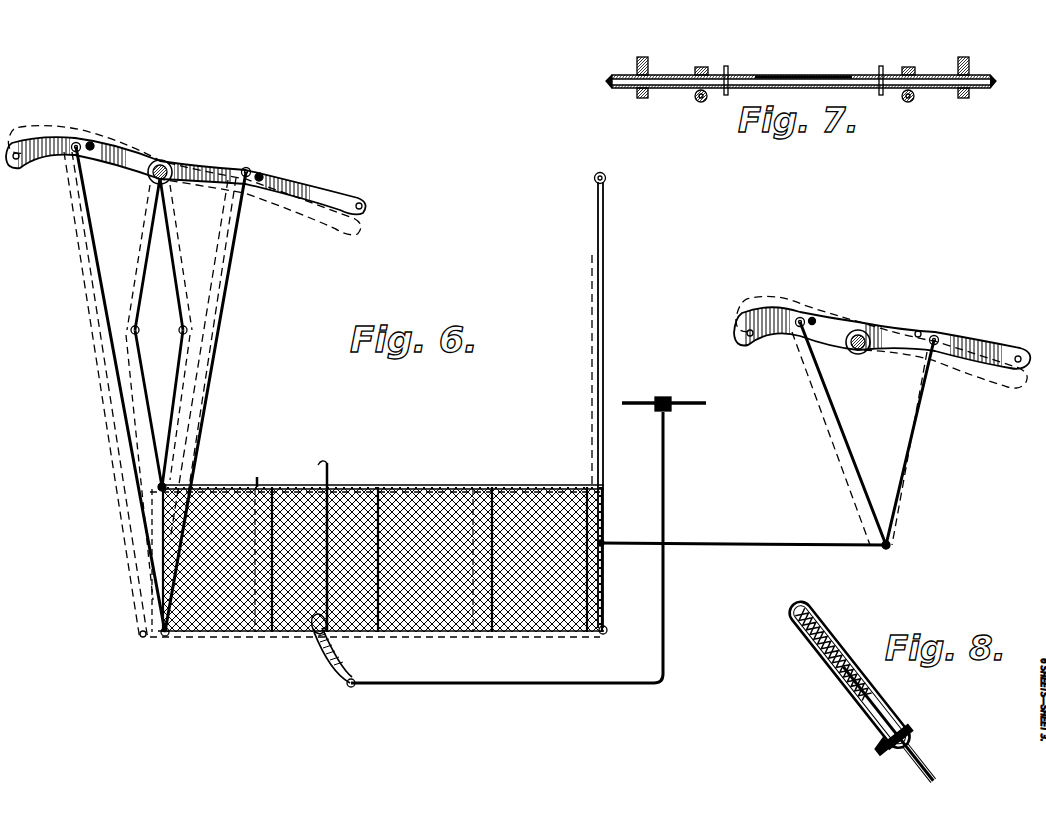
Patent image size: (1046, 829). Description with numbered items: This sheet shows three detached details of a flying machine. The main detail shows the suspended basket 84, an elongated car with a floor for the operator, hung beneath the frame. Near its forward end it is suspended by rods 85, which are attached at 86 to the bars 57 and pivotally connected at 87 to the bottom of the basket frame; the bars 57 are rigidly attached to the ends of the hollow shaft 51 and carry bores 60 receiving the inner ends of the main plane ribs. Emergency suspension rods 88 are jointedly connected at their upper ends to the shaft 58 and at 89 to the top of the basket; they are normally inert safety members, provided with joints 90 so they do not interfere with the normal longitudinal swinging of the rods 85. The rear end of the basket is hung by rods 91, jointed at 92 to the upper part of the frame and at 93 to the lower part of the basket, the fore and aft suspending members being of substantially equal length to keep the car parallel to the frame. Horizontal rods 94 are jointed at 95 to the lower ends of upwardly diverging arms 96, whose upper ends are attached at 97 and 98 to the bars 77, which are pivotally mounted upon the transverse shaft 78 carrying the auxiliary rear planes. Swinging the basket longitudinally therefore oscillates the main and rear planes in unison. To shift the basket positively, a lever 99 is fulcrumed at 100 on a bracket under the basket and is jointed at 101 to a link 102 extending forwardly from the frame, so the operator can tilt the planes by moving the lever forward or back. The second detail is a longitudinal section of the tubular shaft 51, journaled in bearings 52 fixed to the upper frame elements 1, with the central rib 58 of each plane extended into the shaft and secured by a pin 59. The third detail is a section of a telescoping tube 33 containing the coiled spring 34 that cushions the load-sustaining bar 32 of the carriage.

In FIG. 7, the upper frame element 1 is at (696, 100).
In FIG. 8, the bar 32 is at (911, 708).
In FIG. 8, the tube 33 is at (854, 637).
In FIG. 8, the coiled spring 34 is at (839, 683).
In FIG. 7, the hollow shaft 51 is at (800, 74).
In FIG. 7, the bearing 52 is at (701, 67).
In FIG. 6, the bar 57 is at (186, 156).
In FIG. 7, the bar 57 is at (642, 56).
In FIG. 6, the central rib 58 is at (149, 175).
In FIG. 7, the central rib 58 is at (612, 89).
In FIG. 7, the pin 59 is at (728, 72).
In FIG. 6, the bore 60 is at (16, 152).
In FIG. 6, the bar 77 is at (876, 324).
In FIG. 6, the transverse shaft 78 is at (866, 351).
In FIG. 6, the basket 84 is at (372, 544).
In FIG. 6, the rod 85 is at (94, 273).
In FIG. 6, the attachment point 86 is at (75, 142).
In FIG. 6, the pivotal connection 87 is at (162, 638).
In FIG. 6, the emergency suspension rod 88 is at (150, 262).
In FIG. 6, the joint 89 is at (168, 484).
In FIG. 6, the joint 90 is at (140, 328).
In FIG. 6, the rod 91 is at (604, 340).
In FIG. 6, the joint 92 is at (606, 178).
In FIG. 6, the joint 93 is at (608, 631).
In FIG. 6, the horizontal rod 94 is at (762, 541).
In FIG. 6, the joint 95 is at (890, 546).
In FIG. 6, the diverging arm 96 is at (906, 424).
In FIG. 6, the attachment point 97 is at (800, 317).
In FIG. 6, the attachment point 98 is at (937, 336).
In FIG. 6, the lever 99 is at (326, 462).
In FIG. 6, the fulcrum 100 is at (312, 640).
In FIG. 6, the joint 101 is at (350, 688).
In FIG. 6, the link 102 is at (526, 680).